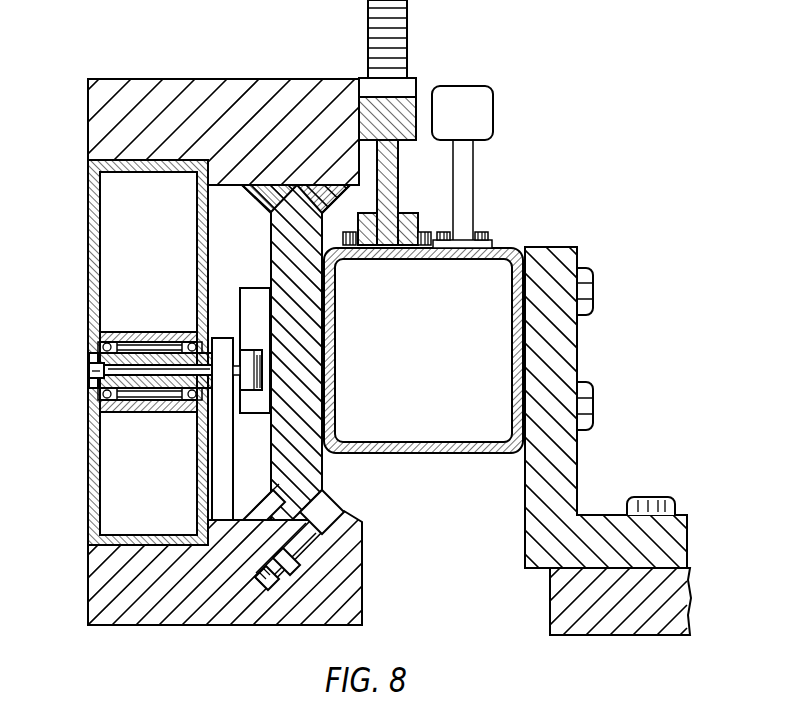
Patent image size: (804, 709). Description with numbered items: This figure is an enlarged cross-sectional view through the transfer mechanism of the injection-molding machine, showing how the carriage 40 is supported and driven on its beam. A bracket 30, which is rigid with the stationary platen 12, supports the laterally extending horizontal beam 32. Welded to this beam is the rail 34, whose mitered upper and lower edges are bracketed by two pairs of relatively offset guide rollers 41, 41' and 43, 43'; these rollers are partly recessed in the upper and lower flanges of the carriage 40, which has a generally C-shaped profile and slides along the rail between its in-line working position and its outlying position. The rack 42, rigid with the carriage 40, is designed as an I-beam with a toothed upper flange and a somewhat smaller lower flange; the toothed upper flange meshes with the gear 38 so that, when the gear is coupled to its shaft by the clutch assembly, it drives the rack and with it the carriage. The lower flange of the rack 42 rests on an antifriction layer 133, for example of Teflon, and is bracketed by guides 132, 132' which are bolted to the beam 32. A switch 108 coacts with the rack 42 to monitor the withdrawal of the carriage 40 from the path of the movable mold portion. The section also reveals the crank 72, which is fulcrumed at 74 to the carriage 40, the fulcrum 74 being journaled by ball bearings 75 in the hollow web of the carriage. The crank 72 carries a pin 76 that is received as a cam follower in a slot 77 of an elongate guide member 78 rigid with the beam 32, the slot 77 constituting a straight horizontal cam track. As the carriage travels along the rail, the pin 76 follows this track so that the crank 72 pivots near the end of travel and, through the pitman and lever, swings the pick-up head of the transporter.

The stationary platen 12 is at (645, 623).
The bracket 30 is at (562, 359).
The horizontal beam 32 is at (476, 455).
The rail 34 is at (310, 472).
The gear 38 is at (397, 28).
The carriage 40 is at (87, 222).
The guide roller 41 is at (256, 203).
The guide roller 41' is at (369, 190).
The rack 42 is at (432, 109).
The guide roller 43 is at (261, 491).
The guide roller 43' is at (331, 540).
The crank 72 is at (222, 397).
The fulcrum 74 is at (153, 352).
The ball bearings 75 is at (170, 400).
The pin 76 is at (262, 374).
The slot 77 is at (248, 352).
The guide member 78 is at (258, 300).
The switch 108 is at (493, 105).
The guide 132 is at (367, 263).
The guide 132' is at (467, 218).
The antifriction layer 133 is at (400, 262).